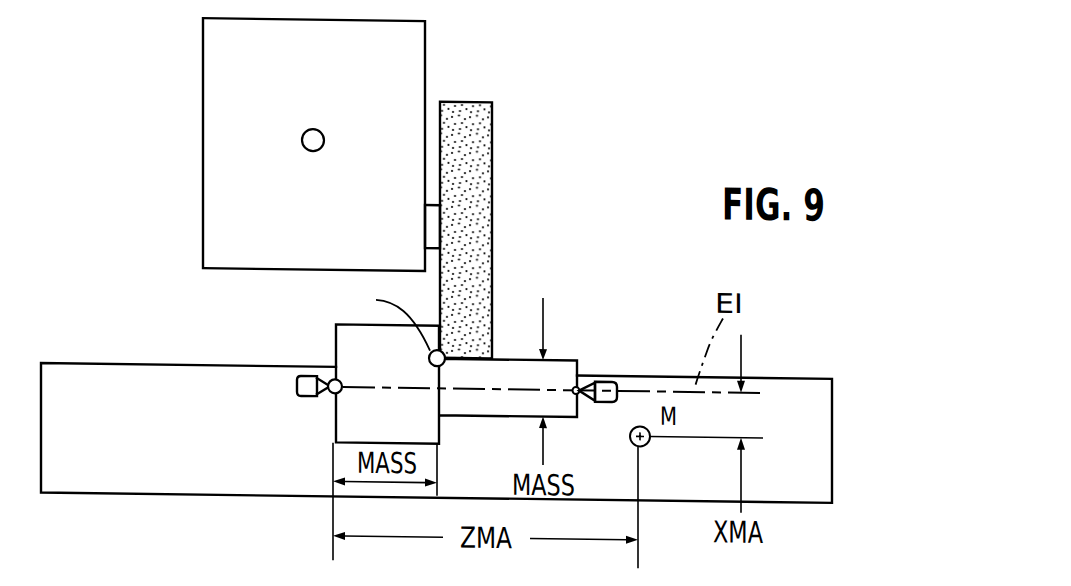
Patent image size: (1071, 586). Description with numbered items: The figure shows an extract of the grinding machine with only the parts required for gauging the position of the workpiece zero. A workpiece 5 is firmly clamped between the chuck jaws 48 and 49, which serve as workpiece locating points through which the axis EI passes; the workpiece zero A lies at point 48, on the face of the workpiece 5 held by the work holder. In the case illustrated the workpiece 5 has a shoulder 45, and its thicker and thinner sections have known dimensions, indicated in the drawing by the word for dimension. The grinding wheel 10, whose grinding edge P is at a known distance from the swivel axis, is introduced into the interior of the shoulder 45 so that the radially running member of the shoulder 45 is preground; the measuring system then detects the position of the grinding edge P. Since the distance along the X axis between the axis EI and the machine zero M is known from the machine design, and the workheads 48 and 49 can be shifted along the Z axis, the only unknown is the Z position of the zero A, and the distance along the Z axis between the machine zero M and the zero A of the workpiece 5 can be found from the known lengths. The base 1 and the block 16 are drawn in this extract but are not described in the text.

The base 1 is at (98, 437).
The mass body 16 is at (192, 69).
The grinding wheel 10 is at (512, 152).
The workpiece 5 is at (326, 339).
The shoulder 45 is at (424, 329).
The workpiece locating point 48 is at (324, 389).
The workpiece locating point 49 is at (586, 369).